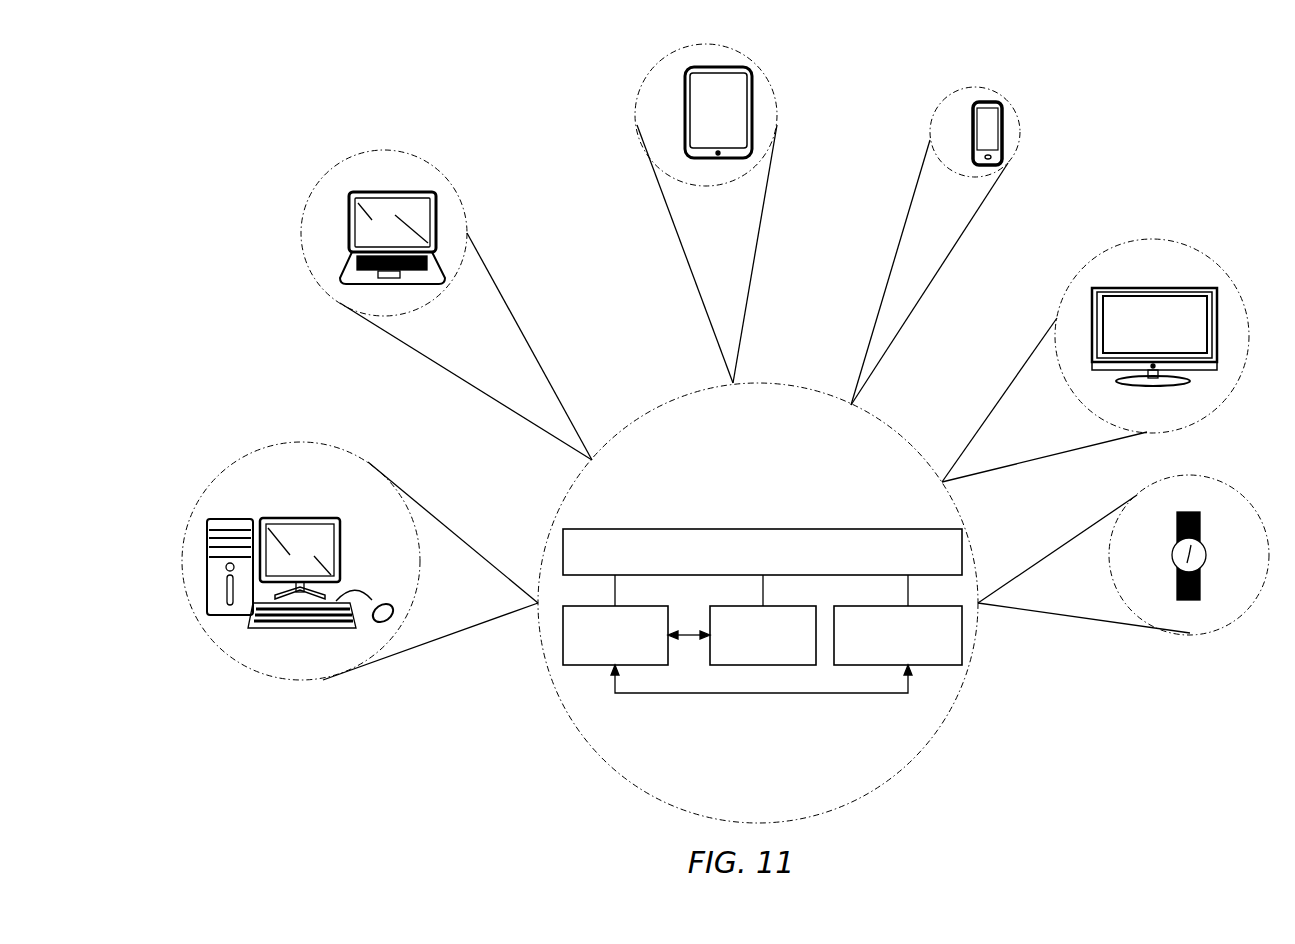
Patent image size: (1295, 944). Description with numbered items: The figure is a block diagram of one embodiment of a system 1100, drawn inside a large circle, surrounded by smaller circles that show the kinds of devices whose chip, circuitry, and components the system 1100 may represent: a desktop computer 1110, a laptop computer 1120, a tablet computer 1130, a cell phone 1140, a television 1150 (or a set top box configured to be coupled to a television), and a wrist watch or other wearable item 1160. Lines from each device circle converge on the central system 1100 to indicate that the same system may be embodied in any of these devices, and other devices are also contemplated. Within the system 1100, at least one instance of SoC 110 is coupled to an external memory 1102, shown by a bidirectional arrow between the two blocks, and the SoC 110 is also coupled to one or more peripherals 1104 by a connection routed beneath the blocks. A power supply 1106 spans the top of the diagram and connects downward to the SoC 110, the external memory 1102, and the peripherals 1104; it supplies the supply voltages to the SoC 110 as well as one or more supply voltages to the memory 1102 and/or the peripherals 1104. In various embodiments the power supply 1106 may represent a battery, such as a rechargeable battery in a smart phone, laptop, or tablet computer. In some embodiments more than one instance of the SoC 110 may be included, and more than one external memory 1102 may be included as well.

The system 1100 is at (742, 429).
The power supply 1106 is at (738, 572).
The SoC 110 is at (597, 654).
The external memory 1102 is at (740, 660).
The peripherals 1104 is at (875, 655).
The desktop computer 1110 is at (279, 488).
The laptop computer 1120 is at (347, 243).
The tablet computer 1130 is at (684, 118).
The cell phone 1140 is at (967, 138).
The television 1150 is at (1177, 272).
The wrist watch or other wearable item 1160 is at (1255, 567).